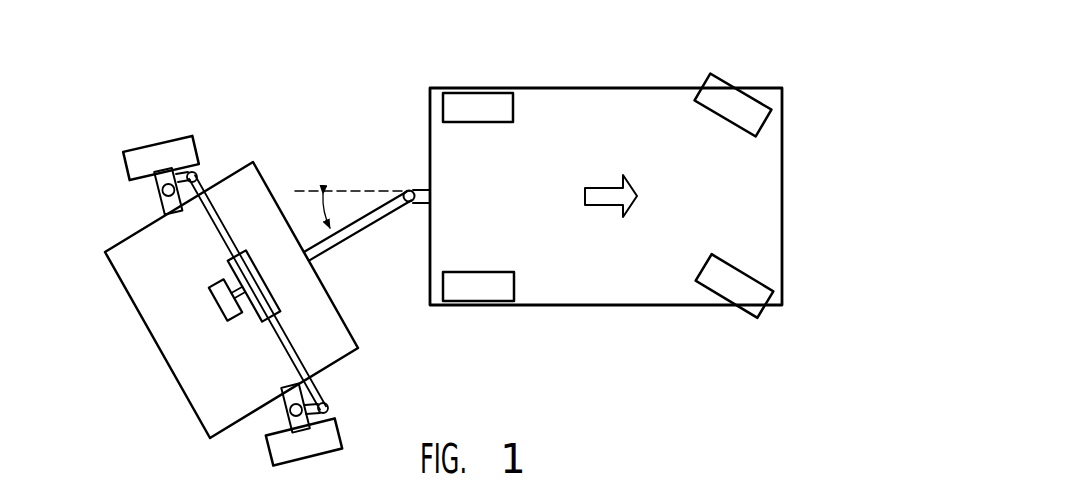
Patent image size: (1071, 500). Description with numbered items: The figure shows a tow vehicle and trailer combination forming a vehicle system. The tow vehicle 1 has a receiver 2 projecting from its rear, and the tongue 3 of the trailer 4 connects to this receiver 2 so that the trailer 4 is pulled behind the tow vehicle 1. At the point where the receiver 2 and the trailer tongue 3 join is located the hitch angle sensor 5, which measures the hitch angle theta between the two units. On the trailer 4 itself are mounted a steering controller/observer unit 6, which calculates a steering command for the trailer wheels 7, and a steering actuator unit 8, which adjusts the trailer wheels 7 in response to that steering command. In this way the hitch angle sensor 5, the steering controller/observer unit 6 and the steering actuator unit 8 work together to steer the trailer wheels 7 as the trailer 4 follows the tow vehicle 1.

The tow vehicle 1 is at (653, 79).
The receiver 2 is at (421, 207).
The tongue 3 is at (340, 253).
The trailer 4 is at (103, 234).
The hitch angle sensor 5 is at (409, 210).
The steering controller/observer unit 6 is at (207, 316).
The trailer wheels 7 is at (160, 158).
The steering actuator unit 8 is at (251, 326).